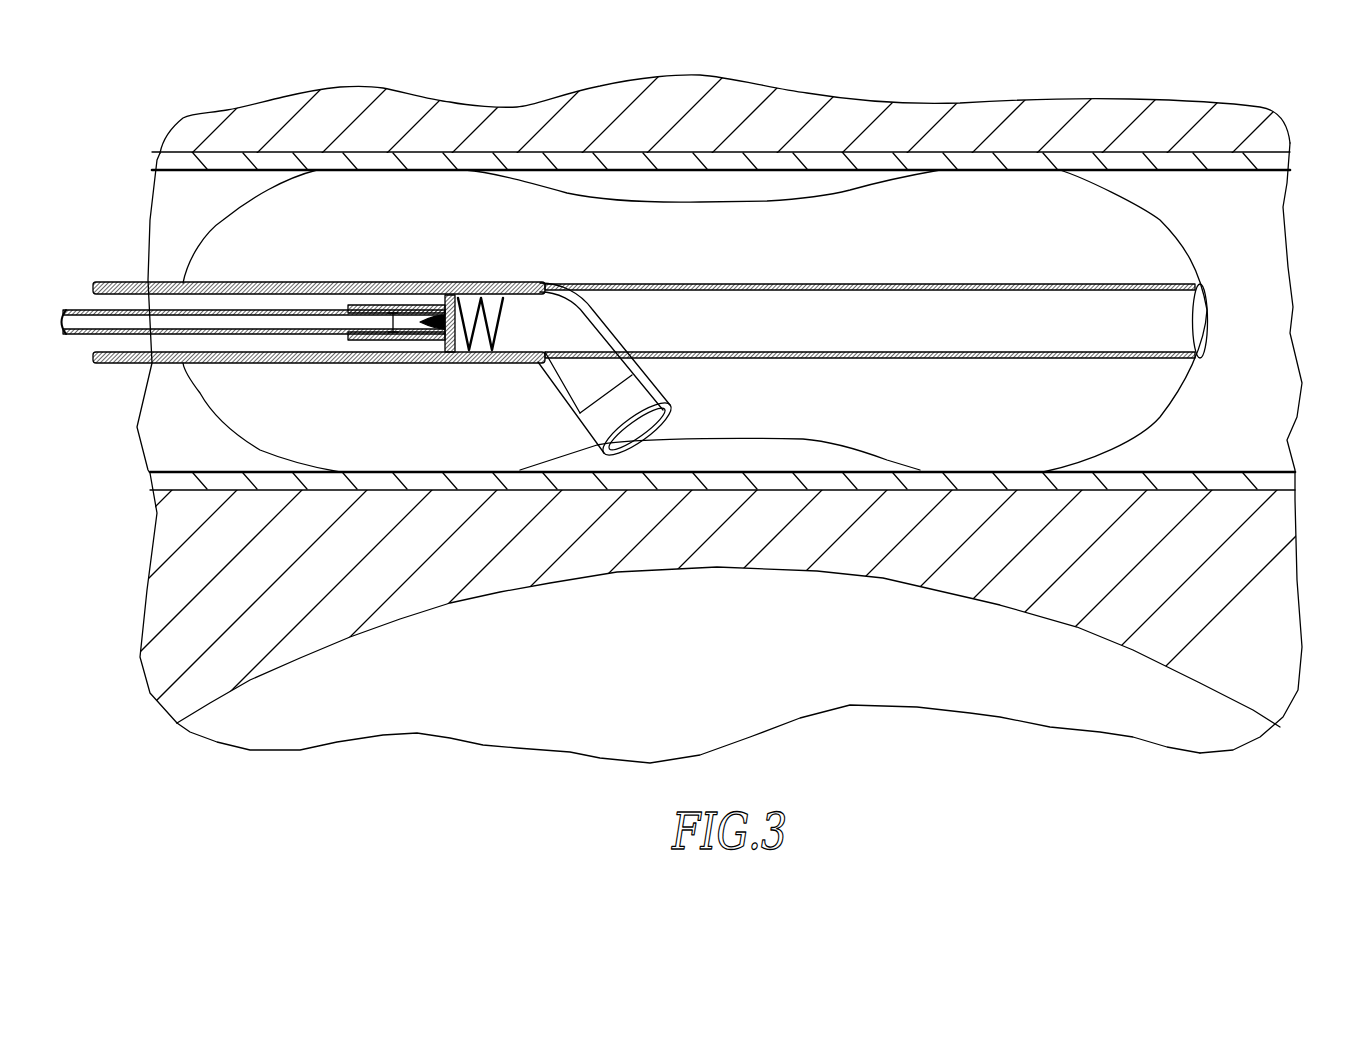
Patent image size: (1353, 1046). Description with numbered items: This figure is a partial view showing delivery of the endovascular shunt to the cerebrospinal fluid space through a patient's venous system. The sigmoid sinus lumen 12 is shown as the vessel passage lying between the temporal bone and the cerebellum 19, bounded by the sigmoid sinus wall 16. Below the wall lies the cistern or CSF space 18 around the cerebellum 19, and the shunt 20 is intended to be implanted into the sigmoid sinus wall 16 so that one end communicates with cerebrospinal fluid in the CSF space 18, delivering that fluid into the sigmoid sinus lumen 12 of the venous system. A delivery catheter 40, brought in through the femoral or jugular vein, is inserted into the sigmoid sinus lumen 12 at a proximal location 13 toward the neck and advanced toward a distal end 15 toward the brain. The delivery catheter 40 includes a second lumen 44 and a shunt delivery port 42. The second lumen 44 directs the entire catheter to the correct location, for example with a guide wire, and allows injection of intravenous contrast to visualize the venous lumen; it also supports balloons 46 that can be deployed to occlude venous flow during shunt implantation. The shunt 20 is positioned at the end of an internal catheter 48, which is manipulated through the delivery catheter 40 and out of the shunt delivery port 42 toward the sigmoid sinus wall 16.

The sigmoid sinus lumen 12 is at (1265, 225).
The proximal location 13 is at (162, 263).
The distal end 15 is at (1268, 343).
The sigmoid sinus wall 16 is at (1000, 487).
The CSF space 18 is at (593, 560).
The cerebellum 19 is at (727, 707).
The shunt 20 is at (504, 322).
The delivery catheter 40 is at (436, 268).
The shunt delivery port 42 is at (558, 365).
The second lumen 44 is at (960, 302).
The balloons 46 is at (220, 428).
The internal catheter 48 is at (278, 325).